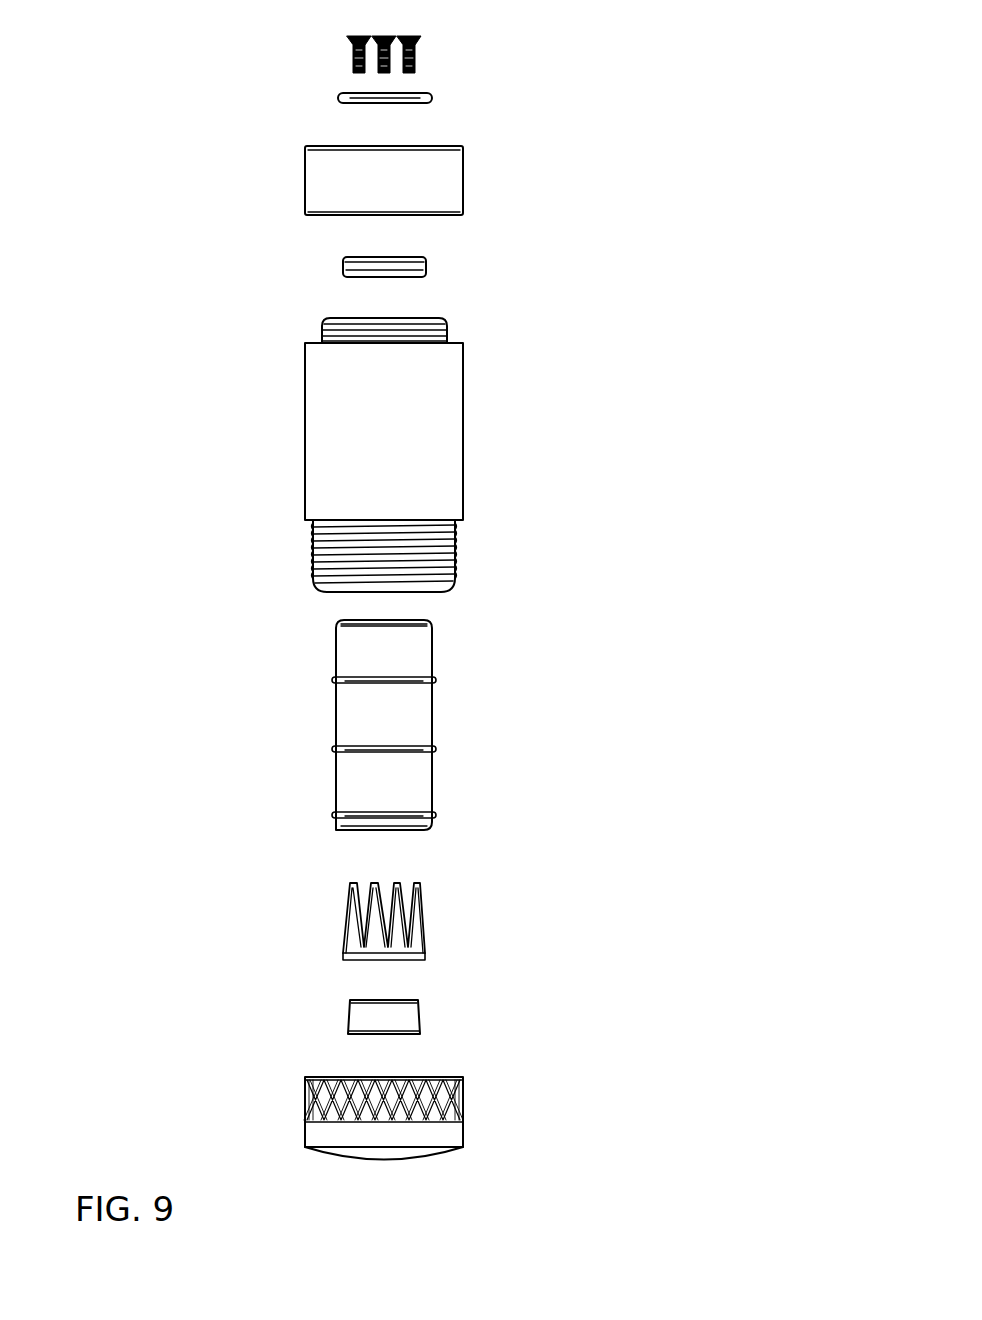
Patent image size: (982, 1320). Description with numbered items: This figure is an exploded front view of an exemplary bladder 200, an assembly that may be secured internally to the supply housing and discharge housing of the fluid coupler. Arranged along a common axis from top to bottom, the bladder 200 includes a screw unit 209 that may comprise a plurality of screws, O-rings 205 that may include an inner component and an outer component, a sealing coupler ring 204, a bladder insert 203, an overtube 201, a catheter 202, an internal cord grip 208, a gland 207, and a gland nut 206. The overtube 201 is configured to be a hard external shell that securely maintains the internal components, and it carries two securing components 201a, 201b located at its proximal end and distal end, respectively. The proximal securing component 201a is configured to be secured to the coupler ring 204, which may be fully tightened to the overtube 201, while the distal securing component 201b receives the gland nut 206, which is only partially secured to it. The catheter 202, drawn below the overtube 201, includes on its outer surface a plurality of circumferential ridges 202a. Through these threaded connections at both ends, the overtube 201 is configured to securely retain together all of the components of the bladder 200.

The bladder 200 is at (205, 461).
The overtube 201 is at (465, 437).
The securing component 201a is at (447, 327).
The securing component 201b is at (447, 547).
The catheter 202 is at (368, 725).
The circumferential ridges 202a is at (436, 817).
The bladder insert 203 is at (344, 266).
The sealing coupler ring 204 is at (465, 172).
The O-rings 205 is at (340, 95).
The gland nut 206 is at (463, 1100).
The gland 207 is at (348, 1010).
The internal cord grip 208 is at (422, 898).
The screw unit 209 is at (422, 50).